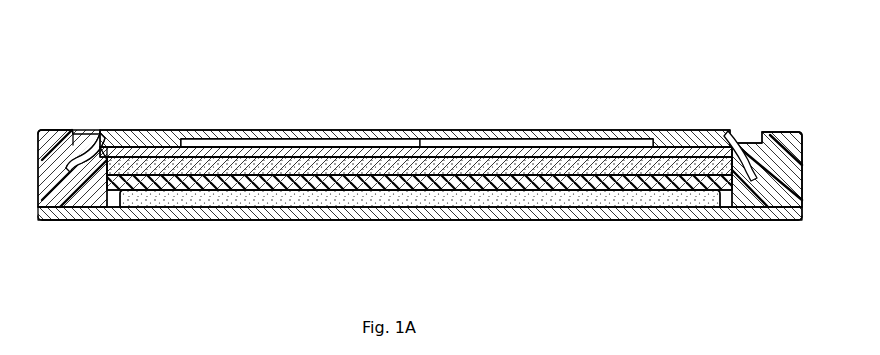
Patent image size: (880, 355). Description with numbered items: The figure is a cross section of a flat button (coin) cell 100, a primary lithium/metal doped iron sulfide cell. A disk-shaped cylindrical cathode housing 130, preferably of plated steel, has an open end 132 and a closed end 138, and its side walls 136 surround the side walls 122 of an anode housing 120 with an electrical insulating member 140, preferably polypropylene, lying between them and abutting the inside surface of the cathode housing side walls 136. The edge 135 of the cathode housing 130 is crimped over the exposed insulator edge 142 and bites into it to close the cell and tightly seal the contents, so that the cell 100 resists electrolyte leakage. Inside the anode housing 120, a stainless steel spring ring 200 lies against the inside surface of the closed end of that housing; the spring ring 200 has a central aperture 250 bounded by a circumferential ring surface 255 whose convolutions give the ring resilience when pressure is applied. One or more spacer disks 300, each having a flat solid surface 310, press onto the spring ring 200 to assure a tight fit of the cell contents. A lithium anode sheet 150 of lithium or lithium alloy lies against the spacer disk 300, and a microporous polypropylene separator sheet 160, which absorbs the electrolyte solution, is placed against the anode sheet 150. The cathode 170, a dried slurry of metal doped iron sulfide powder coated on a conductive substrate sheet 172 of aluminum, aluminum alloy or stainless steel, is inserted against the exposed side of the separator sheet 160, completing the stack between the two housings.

The button cell 100 is at (560, 72).
The anode housing 120 is at (177, 130).
The side walls of anode housing 122 is at (755, 150).
The cathode housing 130 is at (648, 223).
The open end 132 is at (753, 135).
The edge of cathode housing 135 is at (60, 130).
The side walls of cathode housing 136 is at (802, 193).
The closed end 138 is at (357, 220).
The electrical insulating member 140 is at (72, 203).
The insulator disk edge 142 is at (78, 140).
The lithium anode sheet 150 is at (398, 160).
The separator sheet 160 is at (222, 185).
The cathode 170 is at (543, 198).
The conductive substrate sheet 172 is at (445, 207).
The spring ring 200 is at (710, 132).
The central aperture 250 is at (245, 145).
The circumferential ring surface 255 is at (665, 142).
The spacer disk 300 is at (325, 153).
The flat solid surface 310 is at (472, 148).